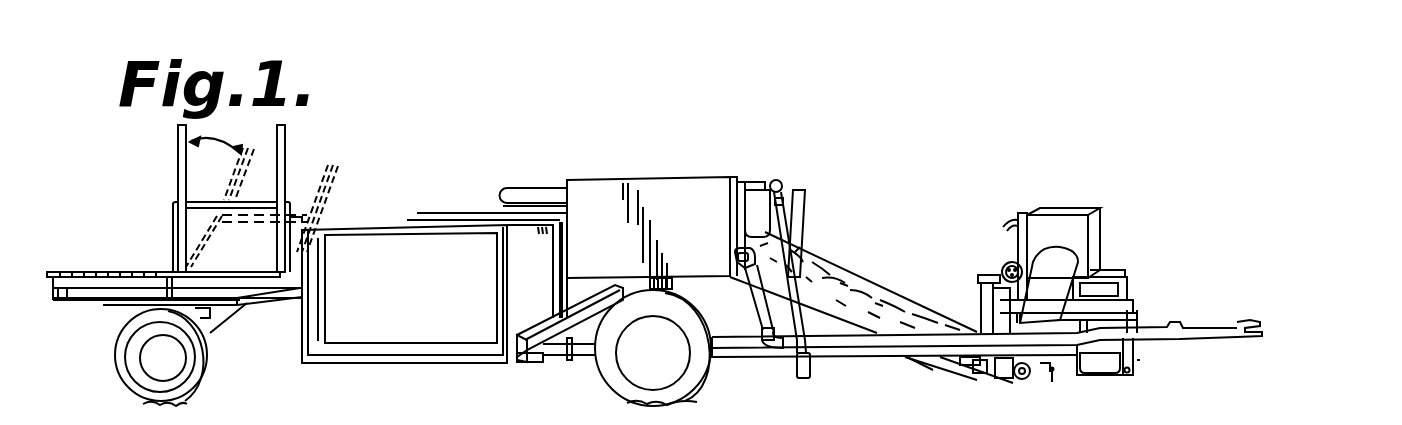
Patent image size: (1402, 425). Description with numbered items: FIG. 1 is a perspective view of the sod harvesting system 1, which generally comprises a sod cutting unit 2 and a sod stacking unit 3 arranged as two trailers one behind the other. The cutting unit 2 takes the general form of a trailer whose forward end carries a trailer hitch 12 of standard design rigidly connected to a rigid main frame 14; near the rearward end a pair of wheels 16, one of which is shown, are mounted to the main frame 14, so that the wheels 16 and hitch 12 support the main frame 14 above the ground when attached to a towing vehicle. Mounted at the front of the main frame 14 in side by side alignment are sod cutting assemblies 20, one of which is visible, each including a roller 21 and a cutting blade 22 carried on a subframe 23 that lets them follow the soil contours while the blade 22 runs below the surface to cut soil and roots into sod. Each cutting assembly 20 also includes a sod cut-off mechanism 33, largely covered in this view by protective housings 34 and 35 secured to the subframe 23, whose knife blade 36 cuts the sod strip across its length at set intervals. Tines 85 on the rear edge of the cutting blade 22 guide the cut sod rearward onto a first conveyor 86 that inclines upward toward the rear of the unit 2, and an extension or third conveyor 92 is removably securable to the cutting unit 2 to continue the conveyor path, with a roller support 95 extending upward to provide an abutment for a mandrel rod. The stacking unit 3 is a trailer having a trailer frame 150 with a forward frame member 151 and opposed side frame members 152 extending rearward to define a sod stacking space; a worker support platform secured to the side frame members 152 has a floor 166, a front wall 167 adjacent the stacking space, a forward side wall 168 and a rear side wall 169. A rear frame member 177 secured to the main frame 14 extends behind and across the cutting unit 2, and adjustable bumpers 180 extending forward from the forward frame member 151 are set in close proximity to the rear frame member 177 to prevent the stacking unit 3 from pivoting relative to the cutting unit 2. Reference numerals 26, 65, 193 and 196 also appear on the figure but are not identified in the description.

The sod harvesting system 1 is at (466, 127).
The sod cutting unit 2 is at (862, 188).
The sod stacking unit 3 is at (401, 186).
The trailer hitch 12 is at (1240, 338).
The main frame 14 is at (831, 358).
The wheels 16 is at (697, 382).
The sod cutting assembly 20 is at (1008, 246).
The roller 21 is at (1023, 379).
The cutting blade 22 is at (1003, 383).
The subframe 23 is at (1000, 278).
The bracket 26 is at (1007, 313).
The sod cut-off mechanism 33 is at (1068, 380).
The protective housing 34 is at (1070, 265).
The protective housing 35 is at (1072, 215).
The knife blade 36 is at (1052, 380).
The hopper 65 is at (338, 361).
The tines 85 is at (987, 380).
The first conveyor 86 is at (937, 368).
The third conveyor 92 is at (523, 190).
The roller support 95 is at (1156, 392).
The trailer frame 150 is at (553, 318).
The forward frame member 151 is at (523, 334).
The side frame members 152 is at (523, 365).
The floor 166 is at (404, 361).
The front wall 167 is at (411, 272).
The forward side wall 168 is at (500, 279).
The rear side wall 169 is at (318, 303).
The rear frame member 177 is at (583, 358).
The bumpers 180 is at (553, 363).
The front trailer wheel 193 is at (200, 365).
The flatbed trailer 196 is at (178, 168).